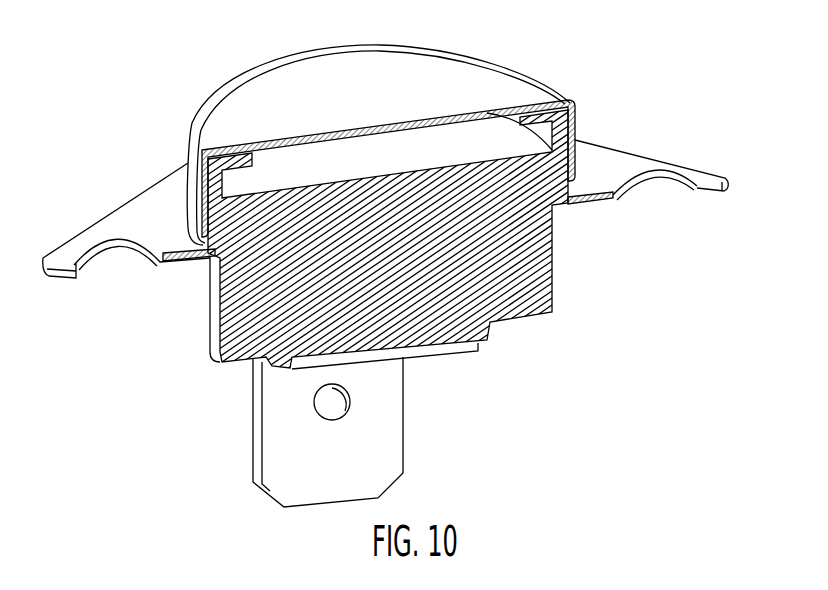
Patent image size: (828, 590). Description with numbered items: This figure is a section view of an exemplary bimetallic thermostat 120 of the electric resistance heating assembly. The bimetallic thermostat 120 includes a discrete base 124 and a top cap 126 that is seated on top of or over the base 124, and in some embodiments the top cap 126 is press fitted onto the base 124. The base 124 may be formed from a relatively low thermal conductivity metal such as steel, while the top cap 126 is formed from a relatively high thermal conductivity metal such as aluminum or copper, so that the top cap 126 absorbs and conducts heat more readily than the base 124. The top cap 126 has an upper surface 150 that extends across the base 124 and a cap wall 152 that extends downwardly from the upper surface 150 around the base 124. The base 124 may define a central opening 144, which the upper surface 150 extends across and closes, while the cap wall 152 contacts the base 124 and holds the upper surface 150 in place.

The bimetallic thermostat 120 is at (386, 279).
The base 124 is at (542, 292).
The top cap 126 is at (197, 133).
The central opening 144 is at (424, 152).
The upper surface 150 is at (468, 73).
The cap wall 152 is at (197, 200).